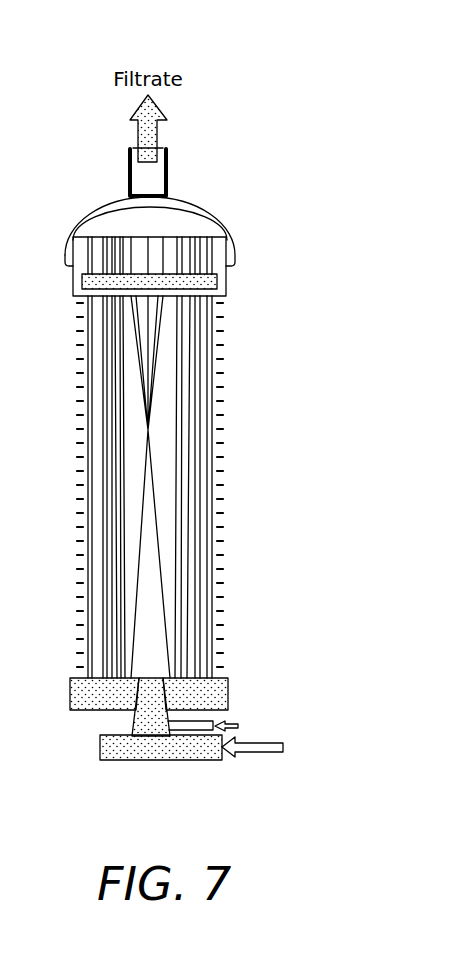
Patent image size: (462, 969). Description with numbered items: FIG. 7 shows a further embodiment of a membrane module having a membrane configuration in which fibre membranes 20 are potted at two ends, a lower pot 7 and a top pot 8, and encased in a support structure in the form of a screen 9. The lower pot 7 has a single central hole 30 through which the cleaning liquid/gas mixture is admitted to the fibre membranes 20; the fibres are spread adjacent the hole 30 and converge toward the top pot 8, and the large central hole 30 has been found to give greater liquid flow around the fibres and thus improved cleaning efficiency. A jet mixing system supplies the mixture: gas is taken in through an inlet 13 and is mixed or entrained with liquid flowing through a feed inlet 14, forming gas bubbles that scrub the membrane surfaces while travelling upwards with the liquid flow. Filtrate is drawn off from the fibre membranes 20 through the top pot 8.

The lower pot 7 is at (228, 678).
The top pot 8 is at (219, 283).
The screen 9 is at (218, 359).
The inlet 13 is at (203, 726).
The feed inlet 14 is at (212, 750).
The fibre membranes 20 is at (190, 443).
The central hole 30 is at (132, 682).